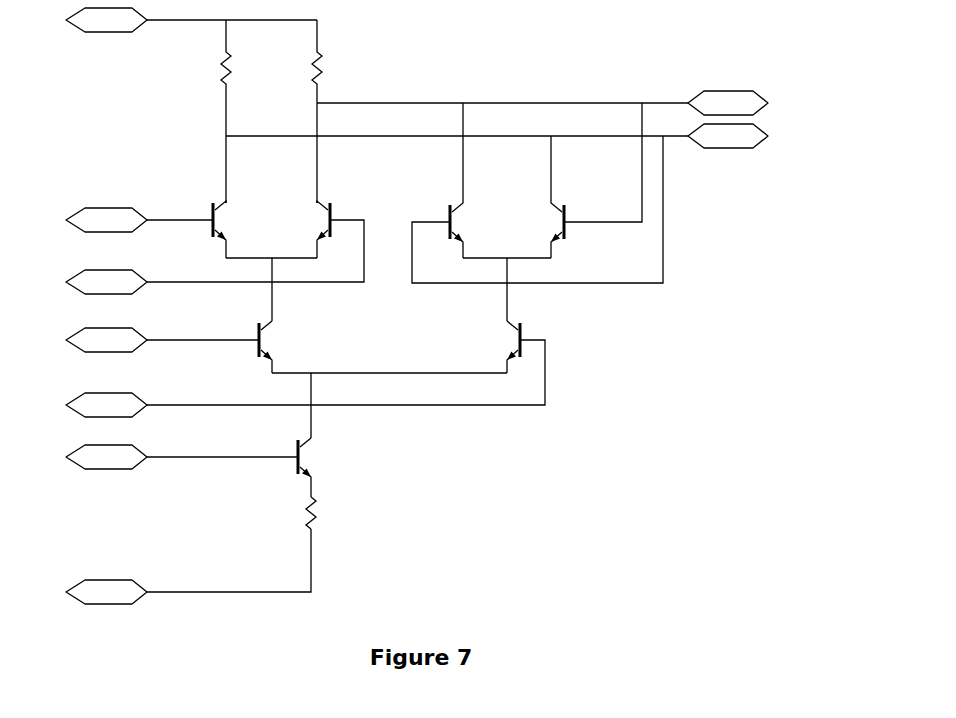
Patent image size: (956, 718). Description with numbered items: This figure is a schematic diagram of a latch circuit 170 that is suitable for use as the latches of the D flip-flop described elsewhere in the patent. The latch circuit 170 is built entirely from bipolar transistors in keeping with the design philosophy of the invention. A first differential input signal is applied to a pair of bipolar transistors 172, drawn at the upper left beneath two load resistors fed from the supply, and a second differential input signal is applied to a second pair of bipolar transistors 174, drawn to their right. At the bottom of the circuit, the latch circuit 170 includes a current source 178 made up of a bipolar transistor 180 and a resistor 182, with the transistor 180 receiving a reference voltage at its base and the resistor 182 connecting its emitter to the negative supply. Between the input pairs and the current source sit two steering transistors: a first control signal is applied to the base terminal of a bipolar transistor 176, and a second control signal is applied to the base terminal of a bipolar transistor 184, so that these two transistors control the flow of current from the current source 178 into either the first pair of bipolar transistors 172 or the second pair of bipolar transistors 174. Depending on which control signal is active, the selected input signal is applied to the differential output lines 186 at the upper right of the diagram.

The latch circuit 170 is at (450, 306).
The pair of bipolar transistors 172 is at (209, 184).
The pair of bipolar transistors 174 is at (498, 167).
The bipolar transistor 176 is at (267, 328).
The current source 178 is at (268, 522).
The bipolar transistor 180 is at (293, 470).
The resistor 182 is at (383, 512).
The bipolar transistor 184 is at (523, 330).
The differential output lines 186 is at (766, 123).